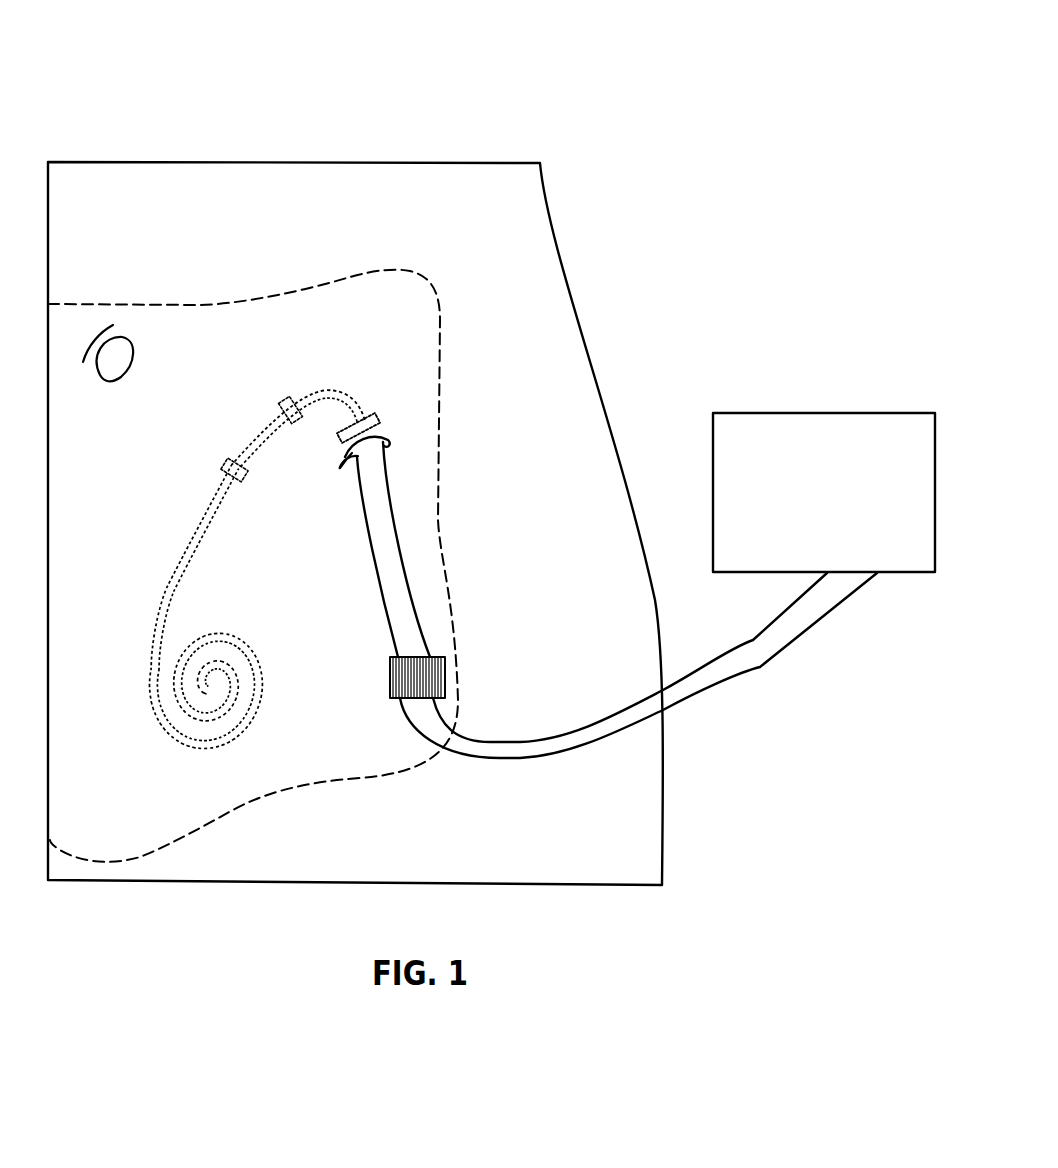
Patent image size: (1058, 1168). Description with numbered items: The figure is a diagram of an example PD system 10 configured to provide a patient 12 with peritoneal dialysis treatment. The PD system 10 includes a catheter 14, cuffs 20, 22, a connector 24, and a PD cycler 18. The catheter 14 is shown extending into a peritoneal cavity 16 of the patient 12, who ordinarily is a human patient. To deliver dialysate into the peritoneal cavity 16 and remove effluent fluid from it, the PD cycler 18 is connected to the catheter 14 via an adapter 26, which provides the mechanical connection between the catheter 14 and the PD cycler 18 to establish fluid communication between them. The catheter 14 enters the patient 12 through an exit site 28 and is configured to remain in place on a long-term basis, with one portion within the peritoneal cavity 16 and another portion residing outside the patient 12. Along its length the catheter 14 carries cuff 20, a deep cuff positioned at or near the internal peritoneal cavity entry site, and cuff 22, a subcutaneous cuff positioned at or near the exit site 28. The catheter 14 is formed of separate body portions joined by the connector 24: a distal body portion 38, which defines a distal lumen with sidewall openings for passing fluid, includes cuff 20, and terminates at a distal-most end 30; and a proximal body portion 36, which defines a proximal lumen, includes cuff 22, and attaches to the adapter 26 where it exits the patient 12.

The PD system 10 is at (84, 48).
The patient 12 is at (266, 236).
The catheter 14 is at (478, 478).
The peritoneal cavity 16 is at (233, 810).
The PD cycler 18 is at (811, 479).
The cuff 20 is at (227, 470).
The cuff 22 is at (378, 412).
The connector 24 is at (287, 405).
The adapter 26 is at (420, 686).
The exit site 28 is at (390, 436).
The distal-most end 30 is at (213, 683).
The proximal body portion 36 is at (394, 345).
The distal body portion 38 is at (153, 414).